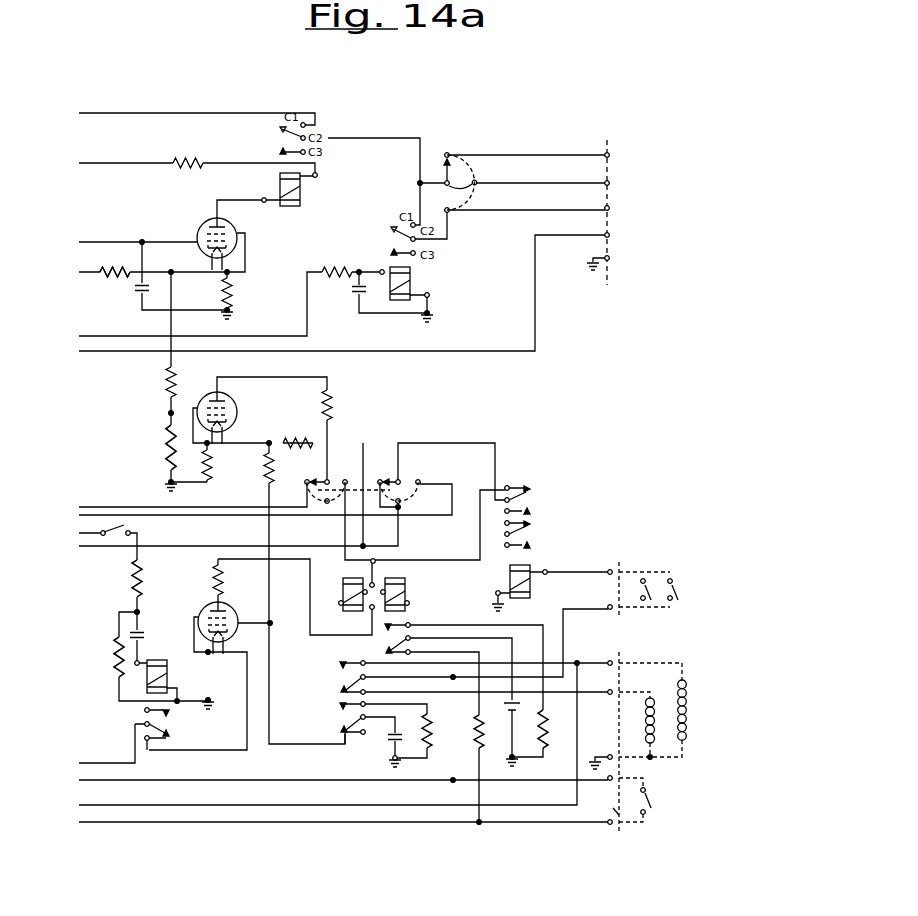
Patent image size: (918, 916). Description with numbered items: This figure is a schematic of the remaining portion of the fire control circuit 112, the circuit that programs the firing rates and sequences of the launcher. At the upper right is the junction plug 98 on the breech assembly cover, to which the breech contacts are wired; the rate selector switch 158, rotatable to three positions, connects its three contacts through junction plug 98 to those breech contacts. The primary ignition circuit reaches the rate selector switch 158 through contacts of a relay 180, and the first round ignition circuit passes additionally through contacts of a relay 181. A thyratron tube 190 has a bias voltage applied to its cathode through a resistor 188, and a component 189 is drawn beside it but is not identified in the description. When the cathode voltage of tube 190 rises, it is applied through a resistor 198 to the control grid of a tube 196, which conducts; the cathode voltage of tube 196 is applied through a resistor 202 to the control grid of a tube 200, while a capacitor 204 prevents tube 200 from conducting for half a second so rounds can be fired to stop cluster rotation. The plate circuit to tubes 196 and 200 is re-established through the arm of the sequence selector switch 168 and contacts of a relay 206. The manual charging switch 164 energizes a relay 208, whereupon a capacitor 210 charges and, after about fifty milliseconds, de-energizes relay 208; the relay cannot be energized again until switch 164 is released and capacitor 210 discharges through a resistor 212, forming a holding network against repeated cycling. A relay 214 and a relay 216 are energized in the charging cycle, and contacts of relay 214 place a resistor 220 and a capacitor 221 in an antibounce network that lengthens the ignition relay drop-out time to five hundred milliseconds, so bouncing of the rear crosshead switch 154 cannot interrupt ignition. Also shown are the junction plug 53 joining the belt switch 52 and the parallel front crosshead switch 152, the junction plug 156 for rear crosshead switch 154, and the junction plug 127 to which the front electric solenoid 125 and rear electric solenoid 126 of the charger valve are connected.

The junction plug 98 is at (610, 168).
The rate selector switch 158 is at (476, 191).
The relay 180 is at (302, 194).
The relay 181 is at (412, 280).
The thyratron tube 190 is at (198, 228).
The resistor 188 is at (112, 278).
The capacitor 189 is at (140, 290).
The resistor 198 is at (170, 384).
The tube 196 is at (238, 412).
The resistor 202 is at (266, 480).
The sequence selector switch 168 is at (352, 480).
The manual charging switch 164 is at (101, 529).
The tube 200 is at (207, 600).
The capacitor 210 is at (142, 634).
The relay 208 is at (165, 662).
The resistor 212 is at (114, 650).
The relay 216 is at (354, 610).
The relay 214 is at (398, 594).
The relay 206 is at (513, 578).
The junction plug 53 is at (621, 580).
The front crosshead switch 152 is at (650, 582).
The belt switch 52 is at (677, 590).
The junction plug 127 is at (621, 728).
The rear electric solenoid 126 is at (656, 712).
The front electric solenoid 125 is at (689, 712).
The rear crosshead switch 154 is at (646, 799).
The junction plug 156 is at (631, 800).
The capacitor 204 is at (392, 739).
The resistor 220 is at (482, 745).
The capacitor 221 is at (518, 705).
The fire control circuit 112 is at (203, 835).